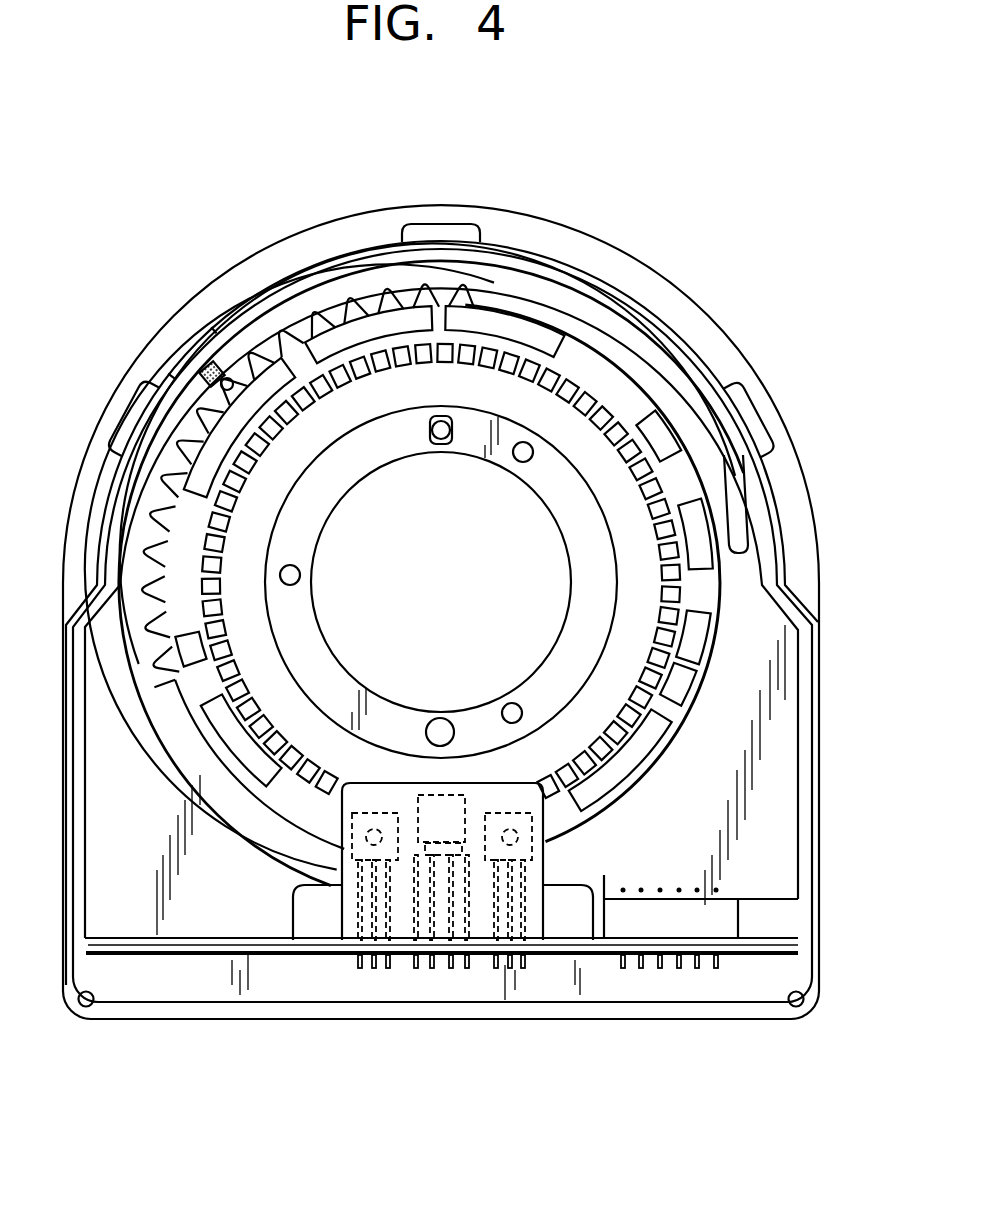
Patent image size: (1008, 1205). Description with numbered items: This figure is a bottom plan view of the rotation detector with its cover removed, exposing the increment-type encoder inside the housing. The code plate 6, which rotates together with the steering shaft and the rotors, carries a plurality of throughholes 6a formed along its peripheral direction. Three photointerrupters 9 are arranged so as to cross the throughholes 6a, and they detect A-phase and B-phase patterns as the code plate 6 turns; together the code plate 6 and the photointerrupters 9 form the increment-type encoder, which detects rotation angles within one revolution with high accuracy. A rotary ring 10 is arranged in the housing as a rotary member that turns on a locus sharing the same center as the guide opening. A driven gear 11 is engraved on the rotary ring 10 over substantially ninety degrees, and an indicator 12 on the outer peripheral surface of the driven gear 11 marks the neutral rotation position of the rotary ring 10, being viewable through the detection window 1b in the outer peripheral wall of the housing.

The detection window 1b is at (195, 352).
The indicator 12 is at (182, 362).
The driven gear 11 is at (485, 297).
The code plate 6 is at (632, 373).
The throughholes 6a is at (670, 527).
The rotary ring 10 is at (735, 579).
The photointerrupters 9 is at (352, 847).